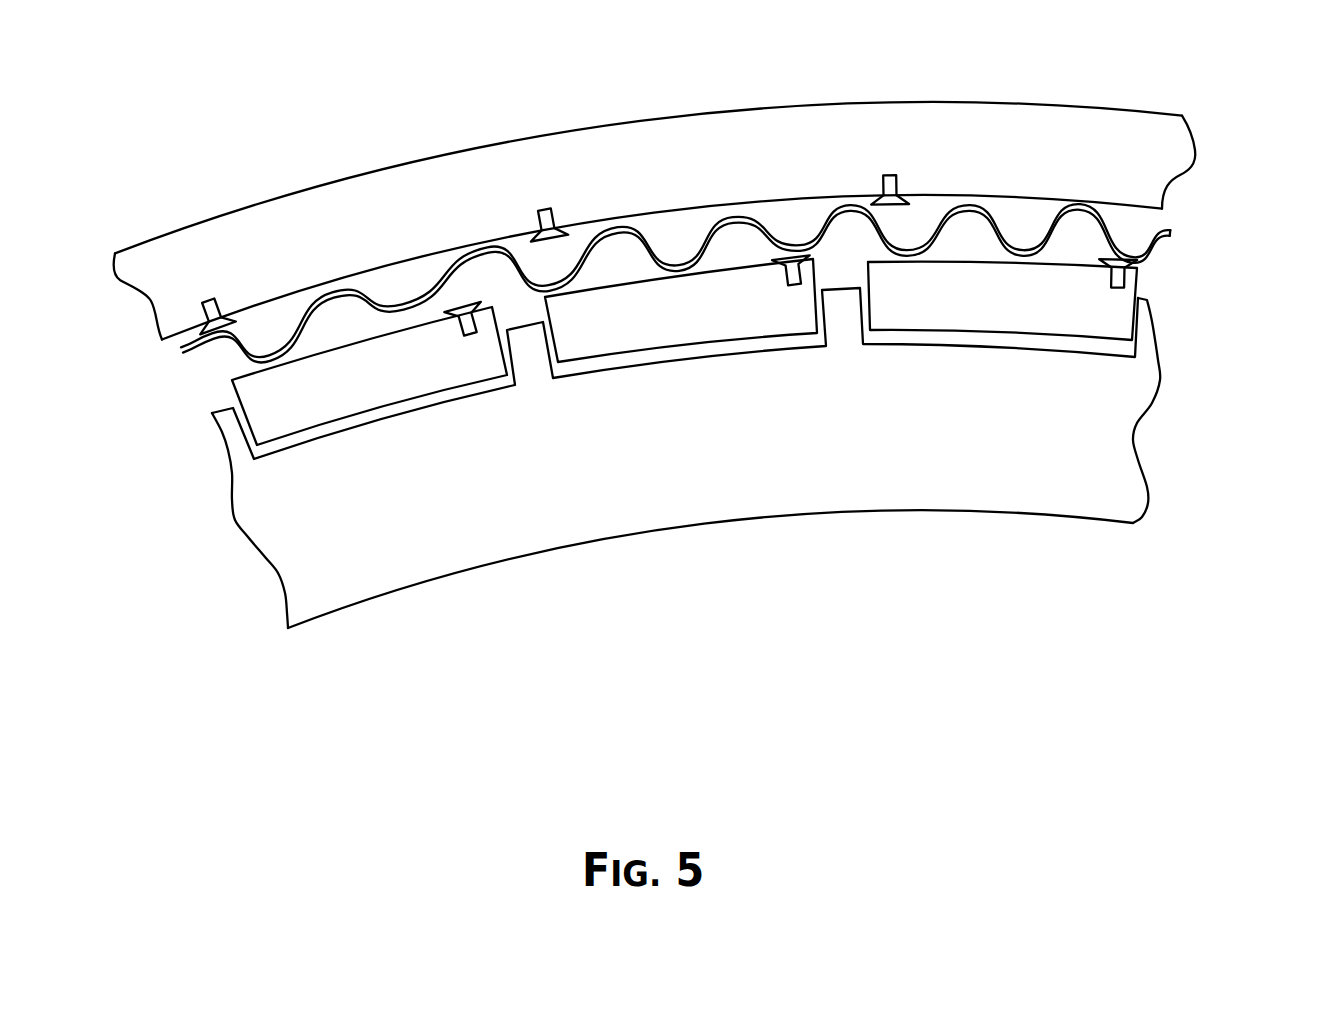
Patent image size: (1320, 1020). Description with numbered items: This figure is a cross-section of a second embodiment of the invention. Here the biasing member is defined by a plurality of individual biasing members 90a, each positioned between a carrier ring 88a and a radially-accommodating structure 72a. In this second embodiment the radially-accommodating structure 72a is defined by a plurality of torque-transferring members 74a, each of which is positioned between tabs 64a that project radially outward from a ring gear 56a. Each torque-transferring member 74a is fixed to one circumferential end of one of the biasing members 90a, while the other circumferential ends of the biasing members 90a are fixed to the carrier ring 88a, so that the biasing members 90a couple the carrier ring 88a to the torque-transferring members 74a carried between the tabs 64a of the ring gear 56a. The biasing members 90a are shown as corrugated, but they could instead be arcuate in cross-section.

The ring gear 56a is at (401, 610).
The tabs 64a is at (537, 367).
The radially-accommodating structure 72a is at (707, 194).
The torque-transferring members 74a is at (367, 357).
The carrier ring 88a is at (602, 145).
The biasing members 90a is at (297, 320).